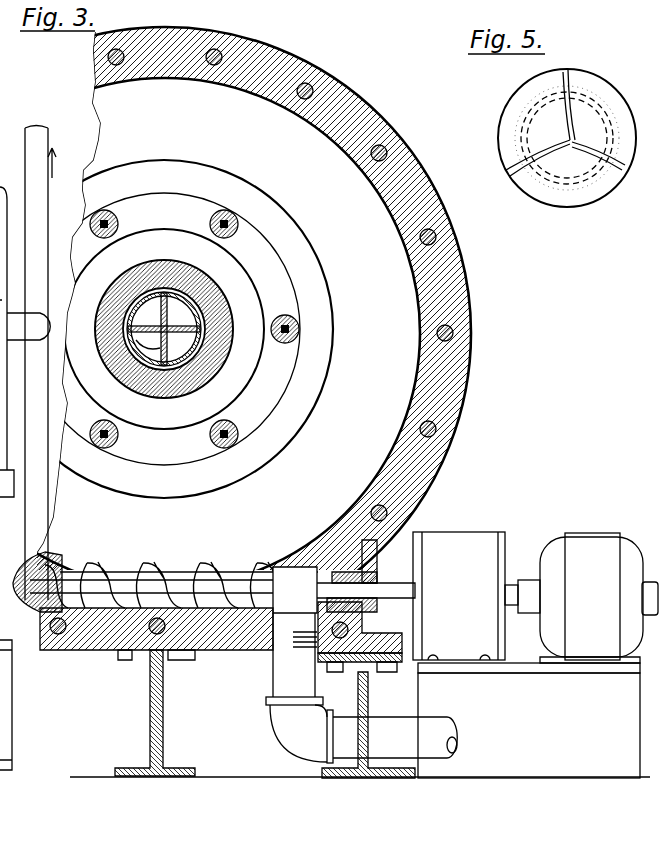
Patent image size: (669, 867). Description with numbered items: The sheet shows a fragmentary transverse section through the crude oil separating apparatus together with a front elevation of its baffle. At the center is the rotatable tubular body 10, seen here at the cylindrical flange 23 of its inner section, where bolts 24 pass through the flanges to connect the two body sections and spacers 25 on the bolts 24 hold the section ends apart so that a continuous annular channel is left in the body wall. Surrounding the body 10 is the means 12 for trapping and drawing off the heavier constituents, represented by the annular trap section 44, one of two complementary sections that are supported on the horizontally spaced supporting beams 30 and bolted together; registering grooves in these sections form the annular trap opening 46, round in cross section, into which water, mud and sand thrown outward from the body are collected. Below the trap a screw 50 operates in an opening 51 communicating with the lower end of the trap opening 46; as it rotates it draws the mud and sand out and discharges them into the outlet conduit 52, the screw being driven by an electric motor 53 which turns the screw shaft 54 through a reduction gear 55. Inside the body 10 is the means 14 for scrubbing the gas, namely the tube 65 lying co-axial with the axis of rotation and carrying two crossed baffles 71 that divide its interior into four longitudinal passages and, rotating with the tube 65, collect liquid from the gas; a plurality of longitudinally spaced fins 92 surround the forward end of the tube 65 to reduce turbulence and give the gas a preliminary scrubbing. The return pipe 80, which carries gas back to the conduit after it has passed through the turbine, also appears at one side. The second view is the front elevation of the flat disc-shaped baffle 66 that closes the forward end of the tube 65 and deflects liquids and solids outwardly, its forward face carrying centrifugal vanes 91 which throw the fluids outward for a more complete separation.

In FIG. 3, the rotatable tubular body 10 is at (291, 281).
In FIG. 3, the means for trapping and drawing off solid matter and heavier liquids 12 is at (415, 397).
In FIG. 3, the means for scrubbing the gas 14 is at (192, 315).
In FIG. 5, the means for scrubbing the gas 14 is at (502, 126).
In FIG. 3, the cylindrical flange 23 is at (278, 384).
In FIG. 3, the bolts 24 is at (300, 330).
In FIG. 3, the spacers 25 is at (246, 220).
In FIG. 3, the supporting beams 30 is at (372, 704).
In FIG. 3, the annular trap section 44 is at (452, 286).
In FIG. 3, the annular trap opening 46 is at (166, 304).
In FIG. 3, the screw 50 is at (165, 568).
In FIG. 3, the screw opening 51 is at (276, 570).
In FIG. 3, the outlet conduit 52 is at (288, 680).
In FIG. 3, the electric motor 53 is at (588, 598).
In FIG. 3, the screw shaft 54 is at (392, 586).
In FIG. 3, the reduction gear 55 is at (465, 596).
In FIG. 3, the tube 65 is at (128, 282).
In FIG. 5, the tube 65 is at (588, 100).
In FIG. 5, the baffle 66 is at (564, 198).
In FIG. 3, the baffles 71 is at (142, 351).
In FIG. 3, the return pipe 80 is at (33, 140).
In FIG. 5, the centrifugal vanes 91 is at (525, 170).
In FIG. 3, the fins 92 is at (210, 377).